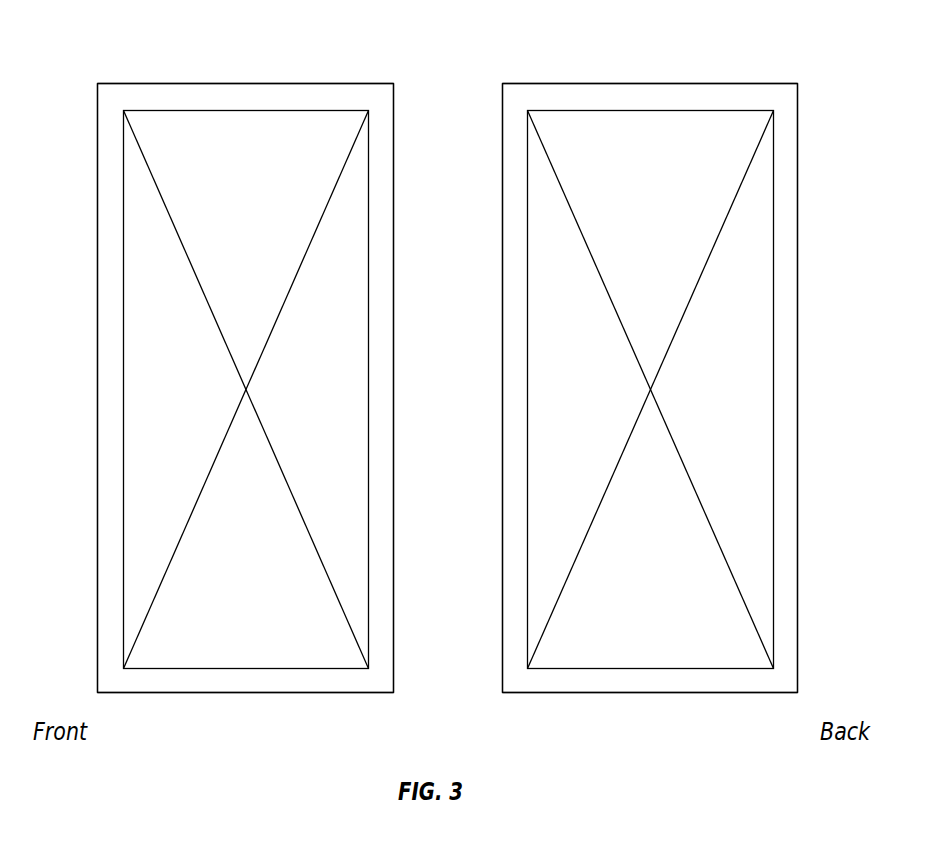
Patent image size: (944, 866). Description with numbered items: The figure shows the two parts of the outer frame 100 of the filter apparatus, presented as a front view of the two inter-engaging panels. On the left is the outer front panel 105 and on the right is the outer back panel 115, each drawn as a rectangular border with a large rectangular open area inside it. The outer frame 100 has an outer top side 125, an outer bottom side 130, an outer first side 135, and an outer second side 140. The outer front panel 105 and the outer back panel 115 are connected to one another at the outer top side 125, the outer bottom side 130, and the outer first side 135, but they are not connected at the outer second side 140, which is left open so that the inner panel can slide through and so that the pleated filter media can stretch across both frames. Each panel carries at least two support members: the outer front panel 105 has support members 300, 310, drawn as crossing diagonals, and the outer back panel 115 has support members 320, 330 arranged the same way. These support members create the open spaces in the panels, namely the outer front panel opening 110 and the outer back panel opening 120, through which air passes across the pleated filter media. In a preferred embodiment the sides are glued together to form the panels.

The outer frame 100 is at (112, 30).
The outer front panel 105 is at (117, 83).
The outer back panel 115 is at (778, 83).
The outer top side 125 is at (243, 83).
The outer bottom side 130 is at (244, 693).
The outer first side 135 is at (97, 347).
The outer second side 140 is at (394, 302).
The outer front panel opening 110 is at (155, 385).
The outer back panel opening 120 is at (738, 383).
The support member 300 is at (154, 592).
The support member 310 is at (156, 188).
The support member 320 is at (742, 592).
The support member 330 is at (742, 186).